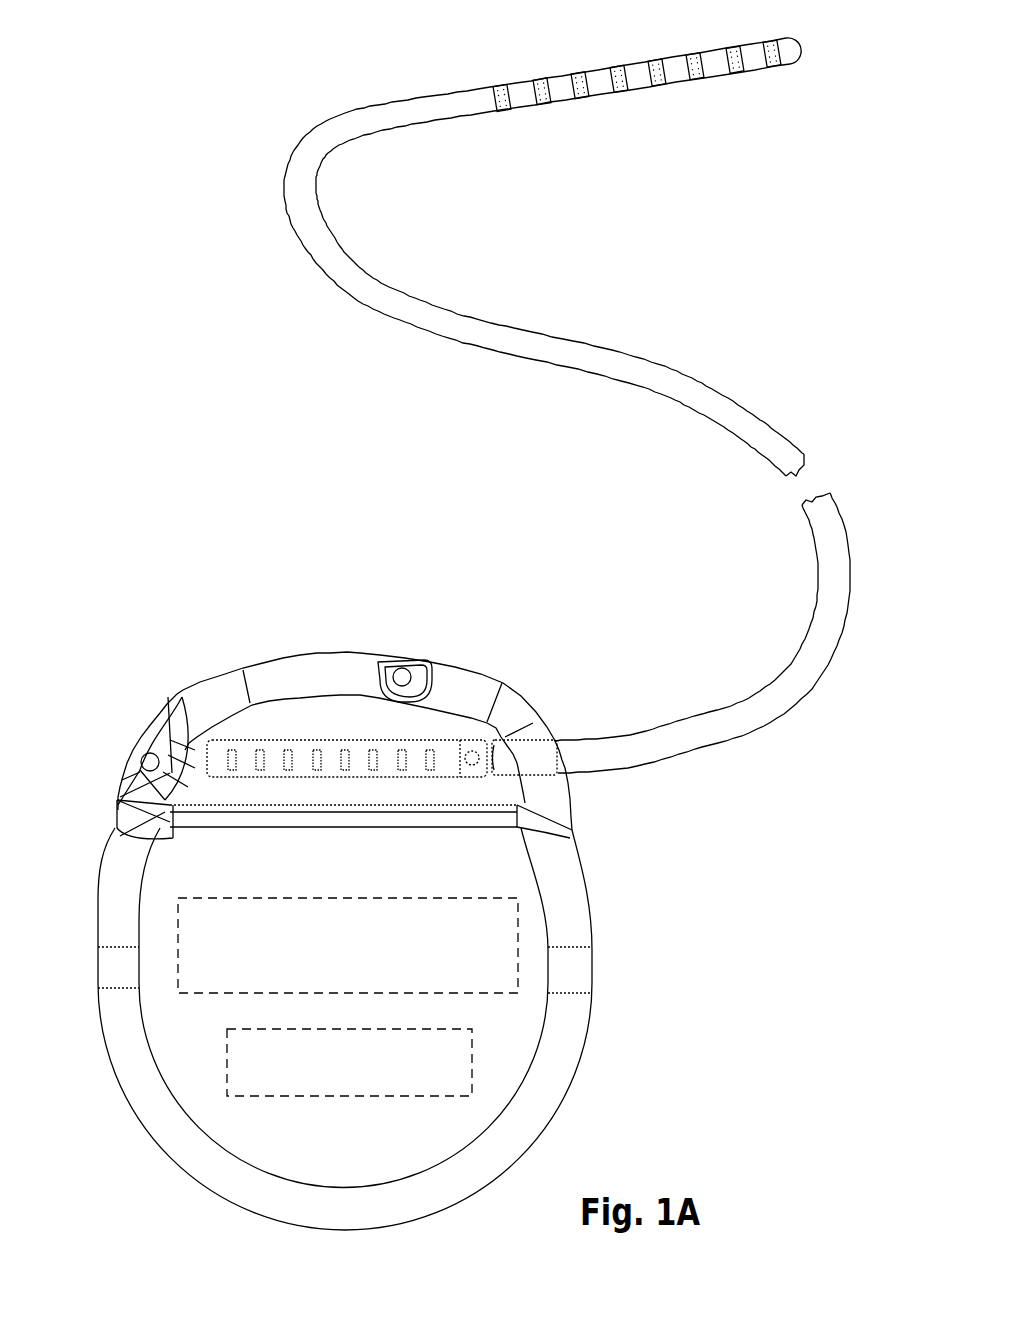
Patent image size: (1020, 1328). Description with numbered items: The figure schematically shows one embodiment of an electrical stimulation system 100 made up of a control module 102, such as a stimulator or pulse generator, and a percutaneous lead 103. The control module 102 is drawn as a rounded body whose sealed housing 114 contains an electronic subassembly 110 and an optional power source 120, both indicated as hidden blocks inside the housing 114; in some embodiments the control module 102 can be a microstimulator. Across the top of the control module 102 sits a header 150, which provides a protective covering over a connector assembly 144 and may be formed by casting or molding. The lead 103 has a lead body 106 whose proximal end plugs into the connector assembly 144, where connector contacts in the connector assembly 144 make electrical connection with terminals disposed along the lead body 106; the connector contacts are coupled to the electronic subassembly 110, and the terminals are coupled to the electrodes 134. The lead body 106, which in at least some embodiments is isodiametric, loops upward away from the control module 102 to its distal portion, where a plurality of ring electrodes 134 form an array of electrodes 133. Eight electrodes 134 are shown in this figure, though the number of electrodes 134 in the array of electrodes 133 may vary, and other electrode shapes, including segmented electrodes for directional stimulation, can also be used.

The electrical stimulation system 100 is at (150, 312).
The control module 102 is at (200, 615).
The percutaneous lead 103 is at (780, 283).
The lead body 106 is at (665, 365).
The electronic subassembly 110 is at (198, 952).
The sealed housing 114 is at (180, 873).
The power source 120 is at (245, 1069).
The array of electrodes 133 is at (785, 70).
The electrode 134 is at (541, 82).
The connector assembly 144 is at (440, 742).
The header 150 is at (317, 657).